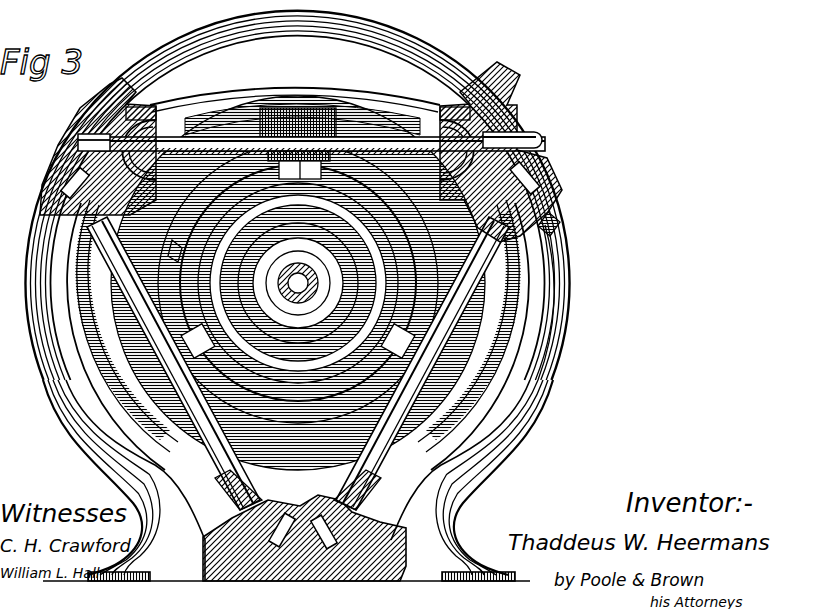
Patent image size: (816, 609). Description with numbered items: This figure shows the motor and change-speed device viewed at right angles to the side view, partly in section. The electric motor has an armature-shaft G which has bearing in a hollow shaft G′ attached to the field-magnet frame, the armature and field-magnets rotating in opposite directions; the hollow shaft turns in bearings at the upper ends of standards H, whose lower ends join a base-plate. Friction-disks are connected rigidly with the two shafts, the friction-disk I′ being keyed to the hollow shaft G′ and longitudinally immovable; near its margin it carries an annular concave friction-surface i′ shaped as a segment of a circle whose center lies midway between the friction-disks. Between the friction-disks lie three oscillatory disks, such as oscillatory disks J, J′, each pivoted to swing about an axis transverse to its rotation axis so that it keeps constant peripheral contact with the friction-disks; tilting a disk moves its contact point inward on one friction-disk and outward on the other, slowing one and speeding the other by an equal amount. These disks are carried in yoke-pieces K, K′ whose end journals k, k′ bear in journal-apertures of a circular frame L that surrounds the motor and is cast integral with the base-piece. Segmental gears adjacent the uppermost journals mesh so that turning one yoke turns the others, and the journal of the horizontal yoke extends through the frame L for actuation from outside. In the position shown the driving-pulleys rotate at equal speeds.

The circular frame L is at (418, 52).
The oscillatory disk J is at (442, 136).
The oscillatory disk J′ is at (556, 230).
The yoke-piece K is at (283, 98).
The yoke-piece K′ is at (462, 392).
The journal k is at (62, 165).
The journal k′ is at (520, 140).
The shaft G is at (312, 266).
The hollow shaft G′ is at (300, 262).
The friction-disk I′ is at (547, 270).
The standard H is at (200, 558).
The annular concave friction-surface i′ is at (170, 252).